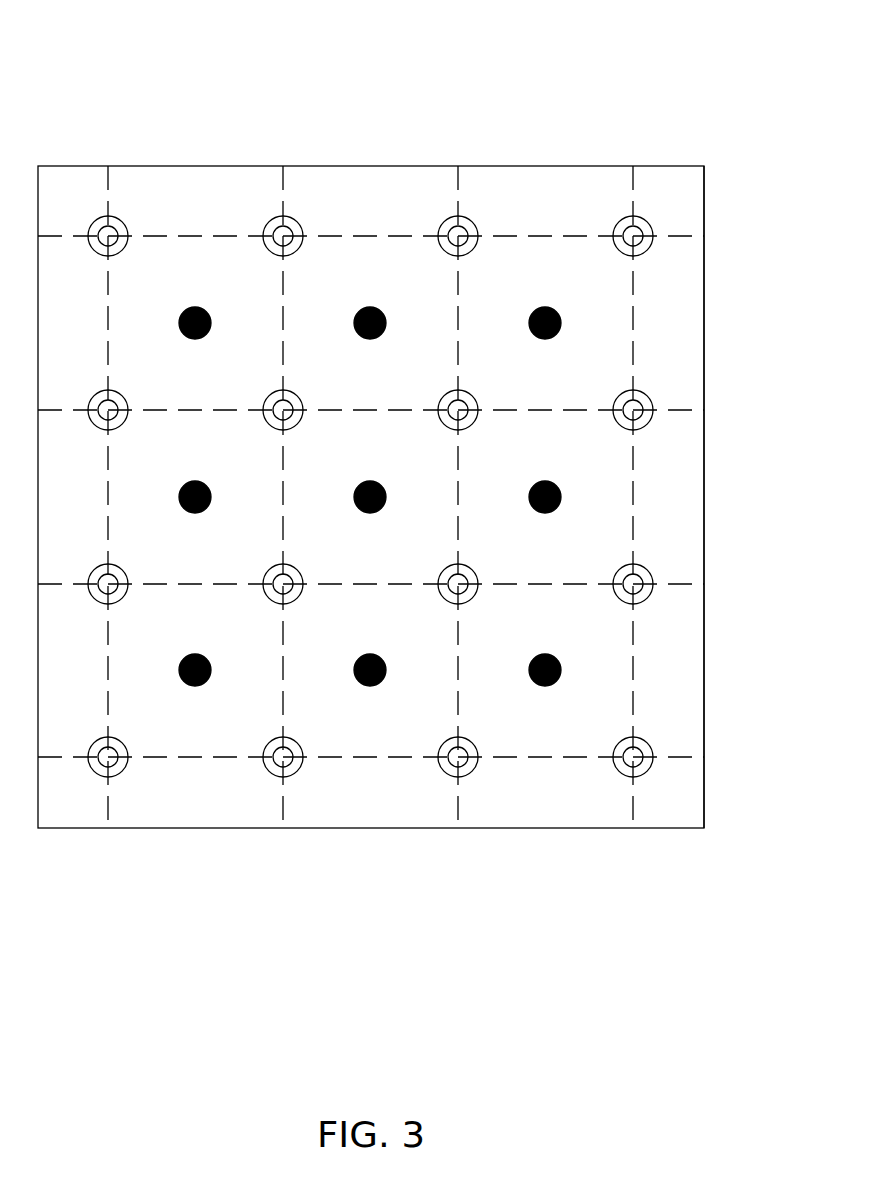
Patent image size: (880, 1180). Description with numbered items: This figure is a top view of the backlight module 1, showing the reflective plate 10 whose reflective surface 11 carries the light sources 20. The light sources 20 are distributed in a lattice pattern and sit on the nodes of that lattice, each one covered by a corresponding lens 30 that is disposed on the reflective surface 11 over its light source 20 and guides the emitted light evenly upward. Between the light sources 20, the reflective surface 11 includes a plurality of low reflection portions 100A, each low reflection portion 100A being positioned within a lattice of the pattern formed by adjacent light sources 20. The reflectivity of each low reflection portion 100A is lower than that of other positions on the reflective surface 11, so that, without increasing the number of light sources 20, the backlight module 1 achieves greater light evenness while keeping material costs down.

The backlight module 1 is at (57, 36).
The reflective plate 10 is at (667, 163).
The reflective surface 11 is at (698, 197).
The light sources 20 is at (270, 227).
The lens 30 is at (445, 217).
The low reflection portion 100A is at (560, 322).